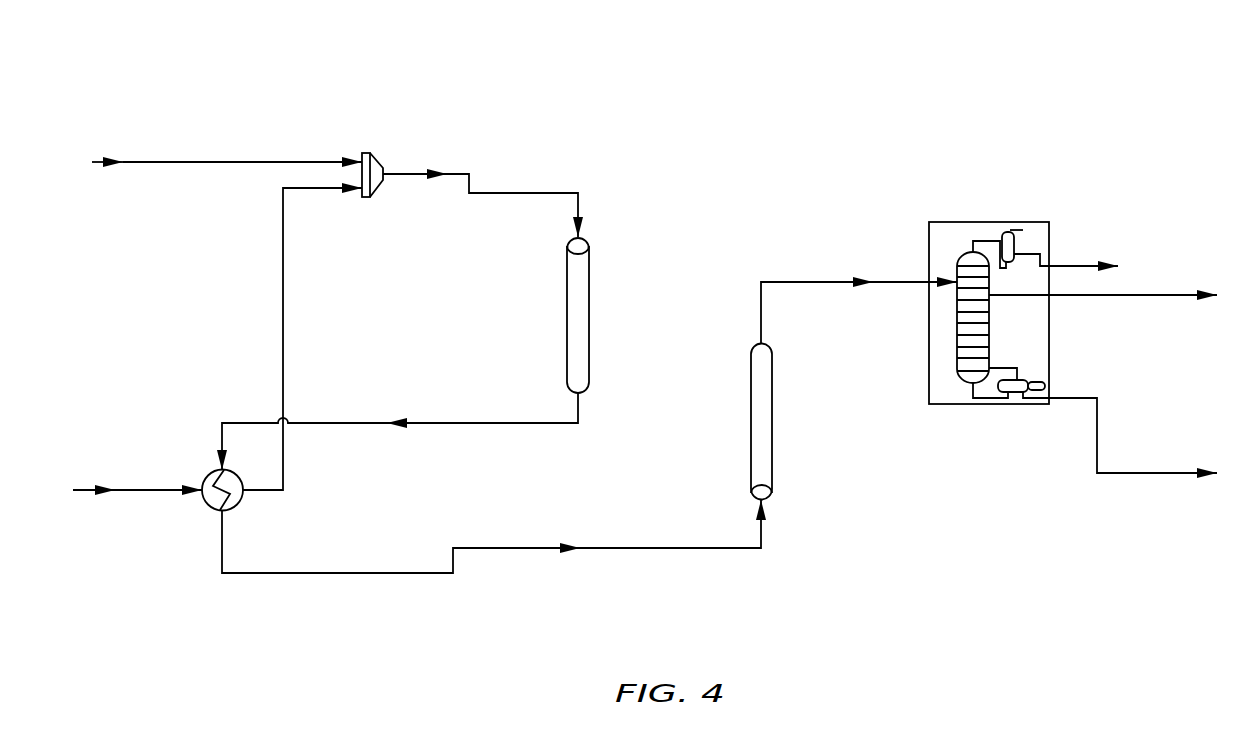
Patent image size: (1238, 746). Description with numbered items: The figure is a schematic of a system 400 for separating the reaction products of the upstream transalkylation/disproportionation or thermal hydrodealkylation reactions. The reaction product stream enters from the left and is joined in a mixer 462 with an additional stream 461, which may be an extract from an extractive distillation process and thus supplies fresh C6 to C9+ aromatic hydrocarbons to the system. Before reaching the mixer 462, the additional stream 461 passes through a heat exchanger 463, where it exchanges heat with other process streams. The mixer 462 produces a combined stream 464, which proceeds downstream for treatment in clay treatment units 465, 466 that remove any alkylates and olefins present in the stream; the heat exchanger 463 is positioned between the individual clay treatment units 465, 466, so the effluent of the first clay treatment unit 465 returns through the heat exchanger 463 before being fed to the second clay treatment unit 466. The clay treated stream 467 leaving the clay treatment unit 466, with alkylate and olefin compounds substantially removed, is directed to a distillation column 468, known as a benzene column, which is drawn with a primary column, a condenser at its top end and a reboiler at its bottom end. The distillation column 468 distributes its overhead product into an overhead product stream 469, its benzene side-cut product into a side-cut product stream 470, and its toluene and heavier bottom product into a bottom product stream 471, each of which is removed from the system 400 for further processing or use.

The system 400 is at (209, 56).
The additional stream 461 is at (148, 485).
The mixer 462 is at (380, 167).
The heat exchanger 463 is at (232, 508).
The combined stream 464 is at (547, 192).
The clay treatment unit 465 is at (590, 280).
The clay treatment unit 466 is at (750, 415).
The clay treated stream 467 is at (780, 280).
The distillation column 468 is at (947, 222).
The overhead product stream 469 is at (1086, 262).
The side-cut product stream 470 is at (1173, 290).
The bottom product stream 471 is at (1100, 437).